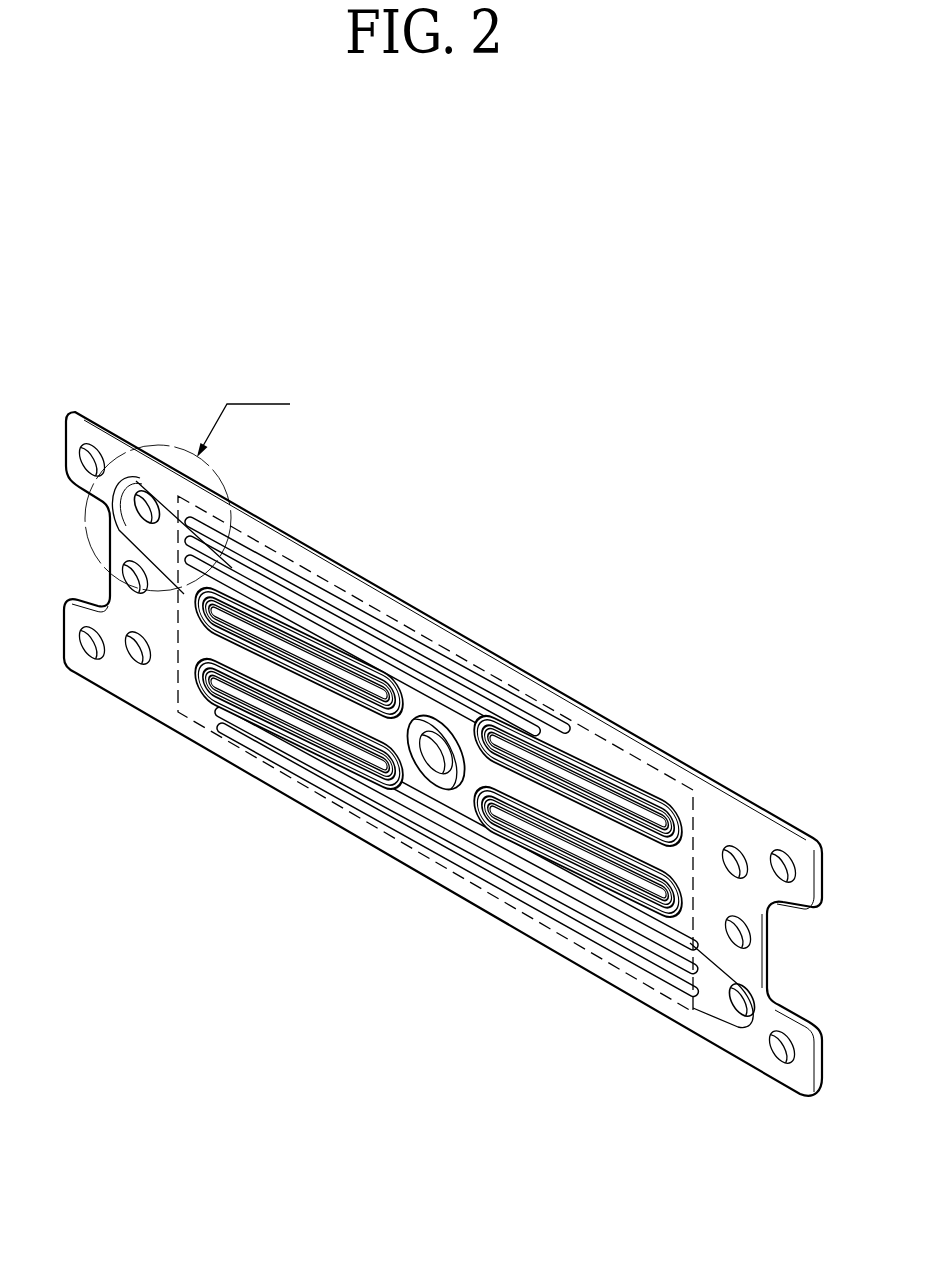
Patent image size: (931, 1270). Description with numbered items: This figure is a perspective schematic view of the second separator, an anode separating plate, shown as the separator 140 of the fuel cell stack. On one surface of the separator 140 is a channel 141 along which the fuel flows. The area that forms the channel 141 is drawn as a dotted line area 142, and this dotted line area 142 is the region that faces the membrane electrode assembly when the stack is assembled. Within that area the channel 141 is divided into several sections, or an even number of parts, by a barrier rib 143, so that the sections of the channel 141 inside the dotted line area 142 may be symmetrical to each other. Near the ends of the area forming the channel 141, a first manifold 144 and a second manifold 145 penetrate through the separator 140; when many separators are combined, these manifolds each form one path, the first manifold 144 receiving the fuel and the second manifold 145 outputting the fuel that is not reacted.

The separator 140 is at (210, 311).
The channel 141 is at (410, 642).
The dotted line area 142 is at (512, 690).
The barrier rib 143 is at (345, 617).
The first manifold 144 is at (148, 505).
The second manifold 145 is at (738, 999).